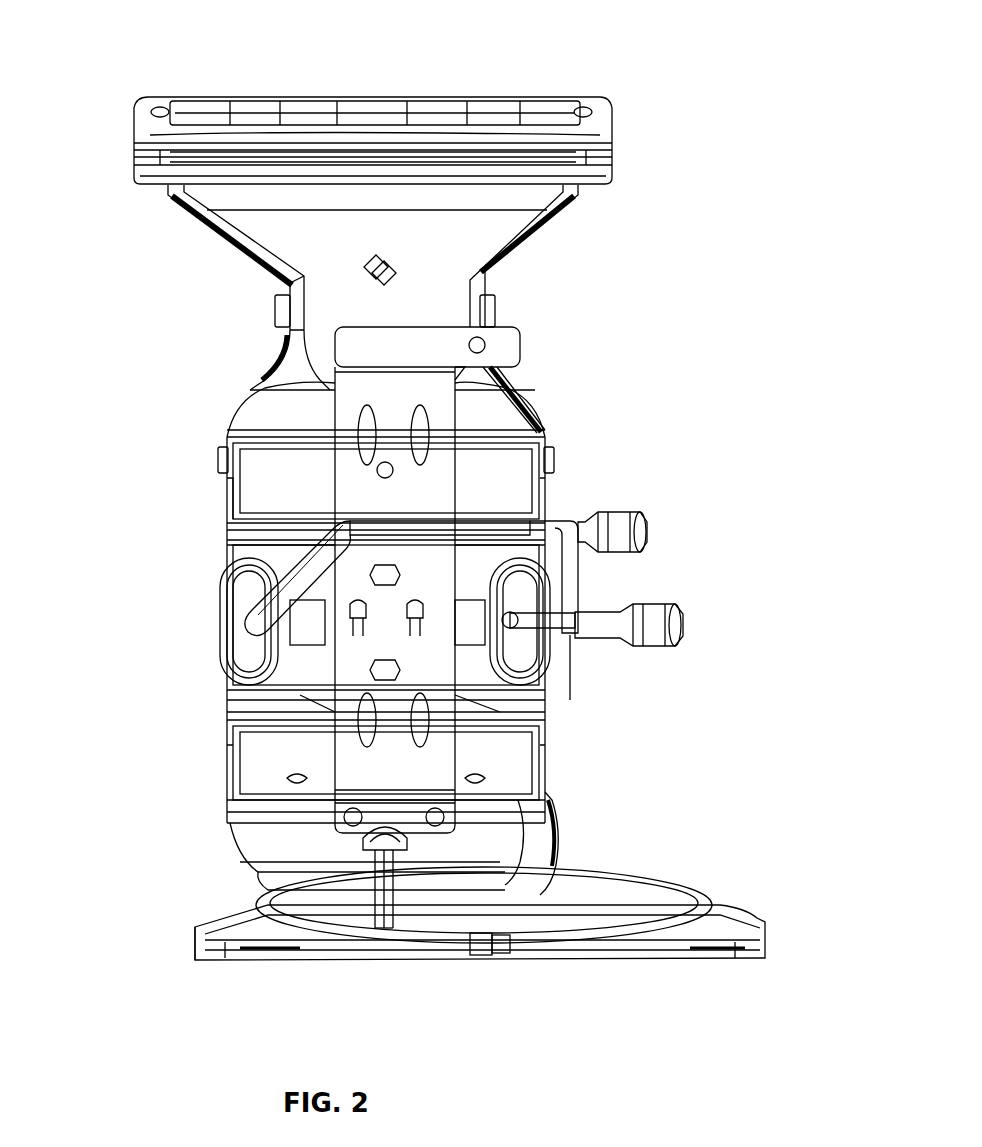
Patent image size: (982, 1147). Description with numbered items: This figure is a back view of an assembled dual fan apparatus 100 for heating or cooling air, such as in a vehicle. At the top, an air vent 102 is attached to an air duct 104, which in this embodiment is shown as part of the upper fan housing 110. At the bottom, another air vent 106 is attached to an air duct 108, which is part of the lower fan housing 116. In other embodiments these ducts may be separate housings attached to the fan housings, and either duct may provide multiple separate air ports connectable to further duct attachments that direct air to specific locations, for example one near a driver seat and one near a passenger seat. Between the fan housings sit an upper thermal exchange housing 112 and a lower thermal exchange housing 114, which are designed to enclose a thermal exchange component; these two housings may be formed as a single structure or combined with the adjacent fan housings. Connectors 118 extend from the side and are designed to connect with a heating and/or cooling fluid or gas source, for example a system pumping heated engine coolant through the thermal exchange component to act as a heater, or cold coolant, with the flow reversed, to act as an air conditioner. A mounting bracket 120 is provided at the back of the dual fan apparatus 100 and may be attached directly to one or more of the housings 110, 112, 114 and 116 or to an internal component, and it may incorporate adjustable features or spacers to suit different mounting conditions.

The dual fan apparatus 100 is at (86, 274).
The air vent 102 is at (400, 95).
The air duct 104 is at (578, 214).
The air vent 106 is at (338, 978).
The air duct 108 is at (562, 858).
The upper fan housing 110 is at (215, 470).
The upper thermal exchange housing 112 is at (213, 580).
The lower thermal exchange housing 114 is at (213, 647).
The lower fan housing 116 is at (560, 757).
The connectors 118 is at (683, 503).
The mounting bracket 120 is at (443, 469).